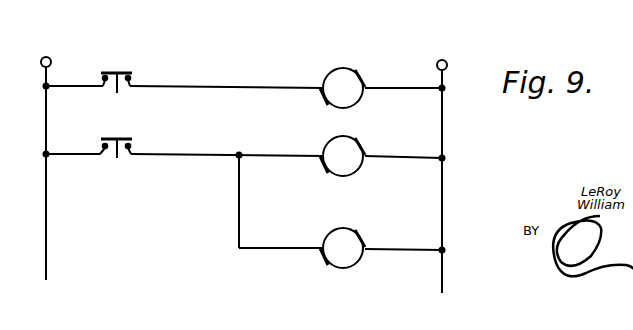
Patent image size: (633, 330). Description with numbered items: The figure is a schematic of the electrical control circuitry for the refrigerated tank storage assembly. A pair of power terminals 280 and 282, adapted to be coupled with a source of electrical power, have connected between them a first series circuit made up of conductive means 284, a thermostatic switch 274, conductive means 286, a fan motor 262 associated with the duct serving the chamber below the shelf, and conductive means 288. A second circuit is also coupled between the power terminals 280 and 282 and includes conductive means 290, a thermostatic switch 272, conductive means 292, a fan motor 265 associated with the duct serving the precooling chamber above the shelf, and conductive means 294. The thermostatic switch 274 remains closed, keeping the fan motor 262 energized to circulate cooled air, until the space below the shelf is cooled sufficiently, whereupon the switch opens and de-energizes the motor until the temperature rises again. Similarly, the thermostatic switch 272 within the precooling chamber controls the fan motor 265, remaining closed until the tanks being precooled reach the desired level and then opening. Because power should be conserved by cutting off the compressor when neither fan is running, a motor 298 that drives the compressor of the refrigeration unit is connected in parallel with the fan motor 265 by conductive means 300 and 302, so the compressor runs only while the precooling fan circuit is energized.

The power terminal 280 is at (46, 57).
The power terminal 282 is at (443, 60).
The conductive means 284 is at (87, 88).
The thermostatic switch 274 is at (121, 72).
The conductive means 286 is at (240, 88).
The fan motor 262 is at (345, 74).
The conductive means 288 is at (408, 89).
The conductive means 290 is at (74, 155).
The thermostatic switch 272 is at (132, 139).
The conductive means 292 is at (191, 155).
The conductive means 300 is at (240, 205).
The fan motor 265 is at (345, 143).
The conductive means 294 is at (405, 159).
The motor 298 is at (345, 235).
The conductive means 302 is at (418, 249).